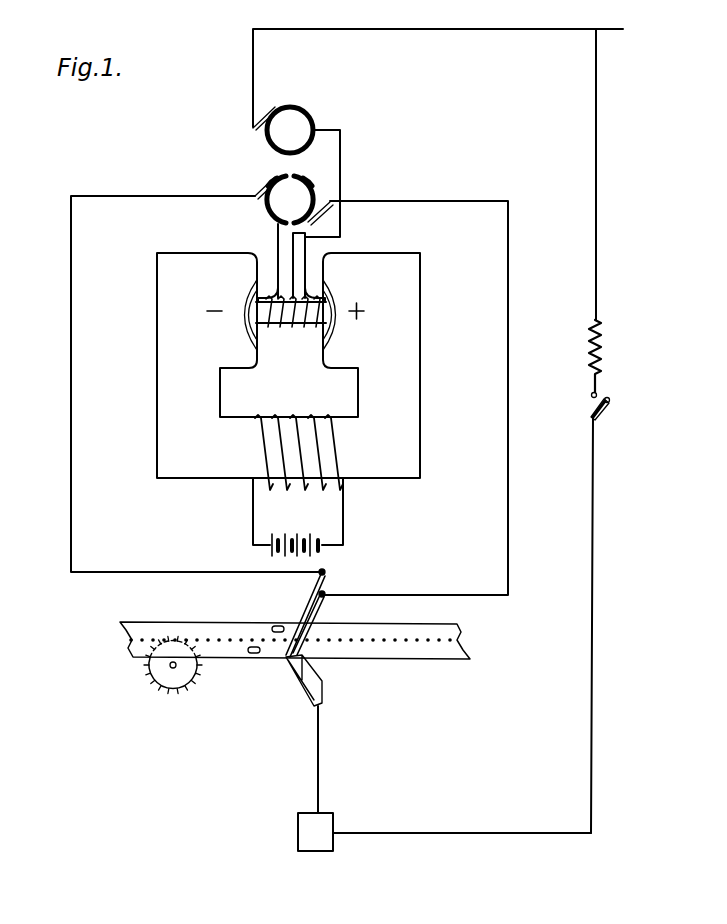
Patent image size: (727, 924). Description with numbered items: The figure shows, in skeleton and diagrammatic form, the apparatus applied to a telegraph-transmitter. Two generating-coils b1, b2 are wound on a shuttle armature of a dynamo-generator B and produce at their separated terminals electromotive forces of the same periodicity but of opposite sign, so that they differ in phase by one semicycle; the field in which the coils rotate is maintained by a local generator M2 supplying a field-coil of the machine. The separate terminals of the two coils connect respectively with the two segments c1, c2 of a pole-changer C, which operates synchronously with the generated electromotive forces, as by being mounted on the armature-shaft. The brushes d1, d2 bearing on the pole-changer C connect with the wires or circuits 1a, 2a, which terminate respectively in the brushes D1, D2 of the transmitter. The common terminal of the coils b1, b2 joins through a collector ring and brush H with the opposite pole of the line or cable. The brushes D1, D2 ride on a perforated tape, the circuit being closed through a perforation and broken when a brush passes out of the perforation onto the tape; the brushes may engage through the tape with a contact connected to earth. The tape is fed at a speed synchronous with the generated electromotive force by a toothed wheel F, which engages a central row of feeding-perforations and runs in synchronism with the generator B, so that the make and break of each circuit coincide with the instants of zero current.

The collector ring and brush H is at (290, 130).
The pole-changer C is at (290, 199).
The brush or terminal d2 is at (255, 183).
The segment of pole-changer c1 is at (317, 176).
The segment of pole-changer c2 is at (257, 205).
The brush or terminal d1 is at (313, 213).
The wire or circuit 2a is at (198, 385).
The wire or circuit 1a is at (424, 399).
The dynamo-generator B is at (298, 365).
The generating-coil b2 is at (291, 326).
The generating-coil b1 is at (308, 326).
The local generator M2 is at (298, 517).
The brush D2 is at (322, 608).
The brush D1 is at (322, 608).
The toothed wheel F is at (190, 675).